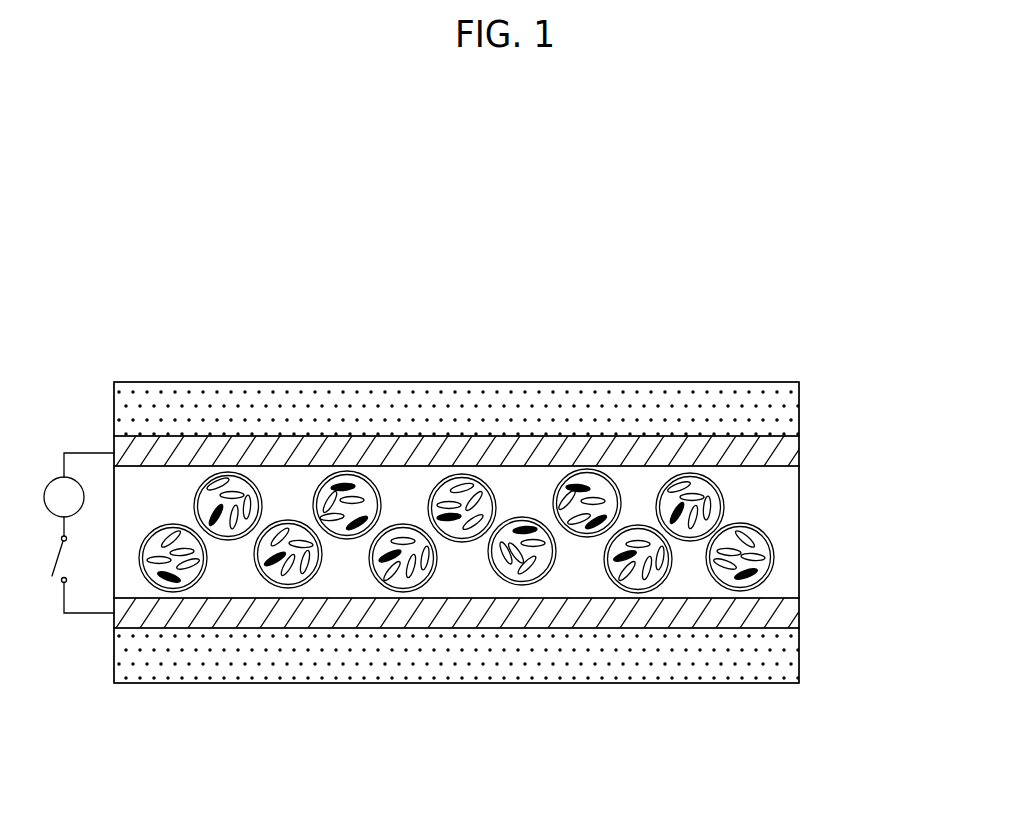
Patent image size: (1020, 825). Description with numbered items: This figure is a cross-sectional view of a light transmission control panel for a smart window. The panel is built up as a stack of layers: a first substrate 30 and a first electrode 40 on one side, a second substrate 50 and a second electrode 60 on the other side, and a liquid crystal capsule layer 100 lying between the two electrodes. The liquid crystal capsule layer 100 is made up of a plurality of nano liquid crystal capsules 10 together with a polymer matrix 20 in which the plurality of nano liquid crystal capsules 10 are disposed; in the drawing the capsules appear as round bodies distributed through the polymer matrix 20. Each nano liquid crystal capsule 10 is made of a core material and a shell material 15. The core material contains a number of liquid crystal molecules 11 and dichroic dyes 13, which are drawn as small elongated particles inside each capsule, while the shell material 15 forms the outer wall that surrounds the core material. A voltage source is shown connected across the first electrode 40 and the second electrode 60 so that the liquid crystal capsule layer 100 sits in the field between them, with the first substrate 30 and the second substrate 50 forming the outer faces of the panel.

The liquid crystal capsule layer 100 is at (502, 571).
The nano liquid crystal capsule 10 is at (902, 503).
The liquid crystal molecules 11 is at (802, 550).
The dichroic dyes 13 is at (812, 576).
The shell material 15 is at (798, 546).
The polymer matrix 20 is at (787, 483).
The first substrate 30 is at (785, 662).
The first electrode 40 is at (787, 617).
The second substrate 50 is at (785, 405).
The second electrode 60 is at (787, 452).